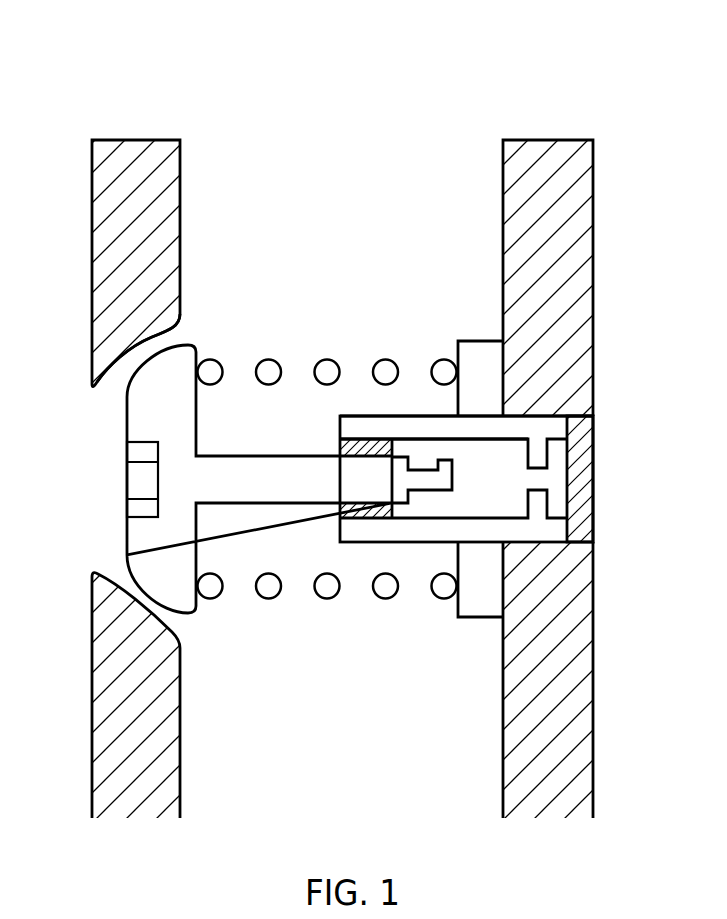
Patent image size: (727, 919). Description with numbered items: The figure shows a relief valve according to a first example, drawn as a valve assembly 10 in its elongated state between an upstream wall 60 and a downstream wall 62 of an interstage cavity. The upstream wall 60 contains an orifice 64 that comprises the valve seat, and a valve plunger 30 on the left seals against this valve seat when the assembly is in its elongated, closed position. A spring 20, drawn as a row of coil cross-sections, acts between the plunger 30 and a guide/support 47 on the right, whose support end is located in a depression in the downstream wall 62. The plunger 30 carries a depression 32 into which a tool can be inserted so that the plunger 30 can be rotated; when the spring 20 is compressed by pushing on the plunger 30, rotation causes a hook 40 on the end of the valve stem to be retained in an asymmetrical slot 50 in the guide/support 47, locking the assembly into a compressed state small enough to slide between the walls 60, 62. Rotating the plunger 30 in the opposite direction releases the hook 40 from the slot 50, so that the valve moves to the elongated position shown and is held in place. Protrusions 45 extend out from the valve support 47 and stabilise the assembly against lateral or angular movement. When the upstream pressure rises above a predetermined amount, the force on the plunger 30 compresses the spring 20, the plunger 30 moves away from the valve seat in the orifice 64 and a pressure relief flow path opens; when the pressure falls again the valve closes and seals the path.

The valve assembly 10 is at (346, 428).
The spring 20 is at (328, 358).
The valve plunger 30 is at (138, 555).
The depression 32 is at (132, 484).
The hook 40 is at (452, 483).
The protrusions 45 is at (497, 386).
The guide/support 47 is at (522, 427).
The asymmetrical slot 50 is at (537, 479).
The upstream wall 60 is at (138, 143).
The downstream wall 62 is at (547, 145).
The orifice 64 is at (116, 388).